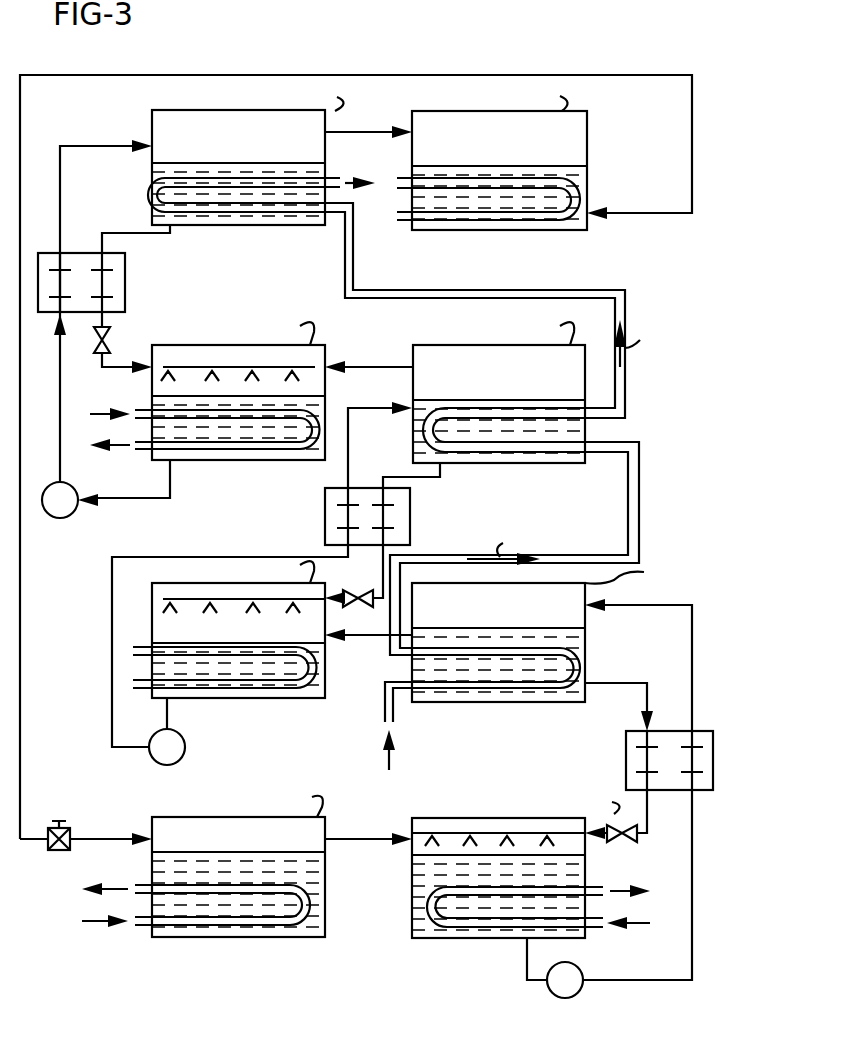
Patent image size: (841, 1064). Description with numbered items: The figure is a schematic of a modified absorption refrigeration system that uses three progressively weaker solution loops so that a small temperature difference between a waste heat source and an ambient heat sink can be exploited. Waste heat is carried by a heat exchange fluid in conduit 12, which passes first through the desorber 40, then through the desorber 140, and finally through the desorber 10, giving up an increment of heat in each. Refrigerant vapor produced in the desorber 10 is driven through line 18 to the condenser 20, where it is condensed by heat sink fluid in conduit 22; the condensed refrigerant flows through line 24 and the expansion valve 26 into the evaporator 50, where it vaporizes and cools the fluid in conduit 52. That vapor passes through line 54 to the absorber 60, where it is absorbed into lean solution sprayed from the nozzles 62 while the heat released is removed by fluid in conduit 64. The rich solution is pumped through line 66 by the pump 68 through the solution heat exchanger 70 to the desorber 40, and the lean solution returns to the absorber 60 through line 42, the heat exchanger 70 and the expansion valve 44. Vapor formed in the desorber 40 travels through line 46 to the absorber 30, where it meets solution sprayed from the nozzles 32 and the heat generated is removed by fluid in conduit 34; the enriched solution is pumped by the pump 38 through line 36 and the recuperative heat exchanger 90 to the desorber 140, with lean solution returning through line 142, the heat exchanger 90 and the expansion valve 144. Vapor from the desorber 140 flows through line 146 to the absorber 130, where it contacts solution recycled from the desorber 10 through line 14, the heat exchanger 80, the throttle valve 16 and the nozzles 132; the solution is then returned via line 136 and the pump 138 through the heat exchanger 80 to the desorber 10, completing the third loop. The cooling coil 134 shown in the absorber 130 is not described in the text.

The desorber 10 is at (152, 122).
The conduit 12 is at (353, 262).
The line 14 is at (155, 233).
The throttle valve 16 is at (93, 342).
The line 18 is at (360, 132).
The condenser 20 is at (587, 166).
The conduit 22 is at (530, 217).
The line 24 is at (692, 130).
The expansion valve 26 is at (62, 828).
The absorber 30 is at (285, 698).
The nozzles 32 is at (245, 610).
The conduit 34 is at (146, 650).
The line 36 is at (350, 447).
The pump 38 is at (160, 765).
The desorber 40 is at (470, 702).
The line 42 is at (632, 683).
The expansion valve 44 is at (635, 842).
The line 46 is at (370, 637).
The evaporator 50 is at (222, 937).
The conduit 52 is at (145, 925).
The line 54 is at (350, 839).
The absorber 60 is at (455, 938).
The nozzles 62 is at (440, 840).
The conduit 64 is at (478, 922).
The line 66 is at (648, 980).
The pump 68 is at (568, 998).
The solution heat exchanger 70 is at (713, 767).
The heat exchanger 80 is at (125, 290).
The heat exchanger 90 is at (410, 520).
The absorber 130 is at (225, 462).
The nozzles 132 is at (178, 368).
The absorber cooling coil 134 is at (147, 455).
The line 136 is at (170, 505).
The pump 138 is at (60, 518).
The desorber 140 is at (535, 463).
The line 142 is at (445, 480).
The expansion valve 144 is at (358, 590).
The line 146 is at (376, 367).